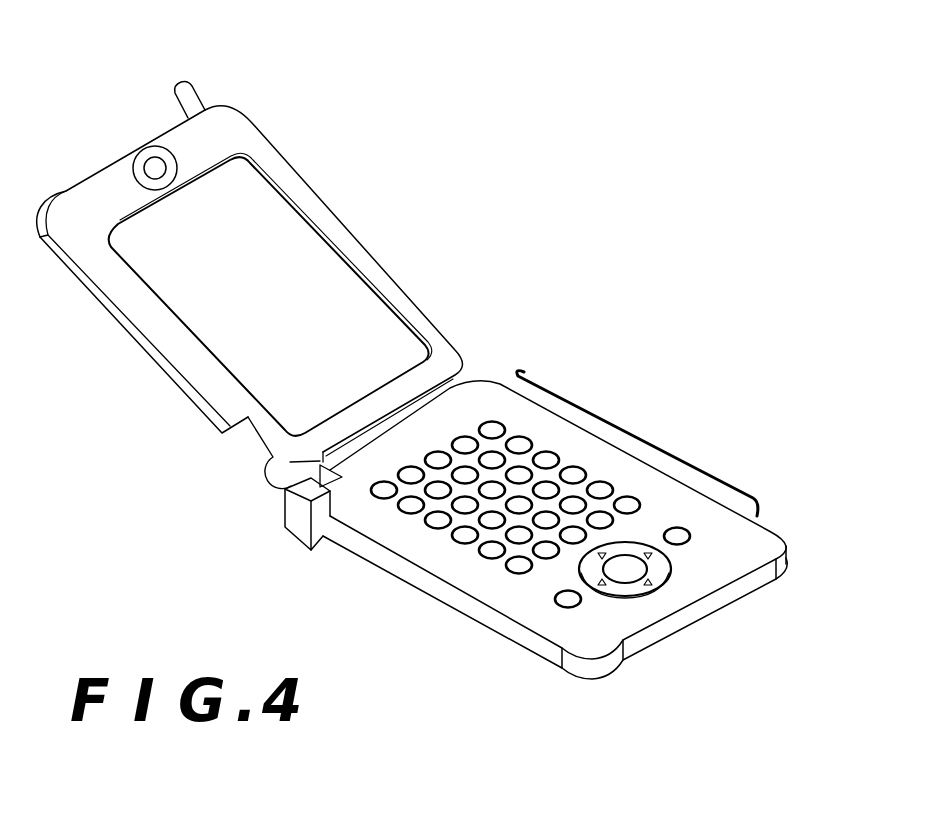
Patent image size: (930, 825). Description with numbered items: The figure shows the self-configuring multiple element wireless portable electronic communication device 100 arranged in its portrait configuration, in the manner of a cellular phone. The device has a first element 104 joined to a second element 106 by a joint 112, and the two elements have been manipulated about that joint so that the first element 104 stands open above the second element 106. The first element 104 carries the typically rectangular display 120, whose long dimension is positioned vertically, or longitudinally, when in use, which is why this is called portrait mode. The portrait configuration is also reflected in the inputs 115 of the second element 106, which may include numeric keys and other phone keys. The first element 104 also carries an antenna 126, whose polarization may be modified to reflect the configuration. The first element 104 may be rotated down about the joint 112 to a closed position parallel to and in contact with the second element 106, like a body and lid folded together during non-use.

The self-configuring multiple element wireless portable electronic communication dev 100 is at (90, 440).
The first element 104 is at (111, 302).
The second element 106 is at (430, 580).
The joint 112 is at (256, 498).
The inputs 115 is at (640, 438).
The display 120 is at (331, 262).
The antenna 126 is at (189, 100).